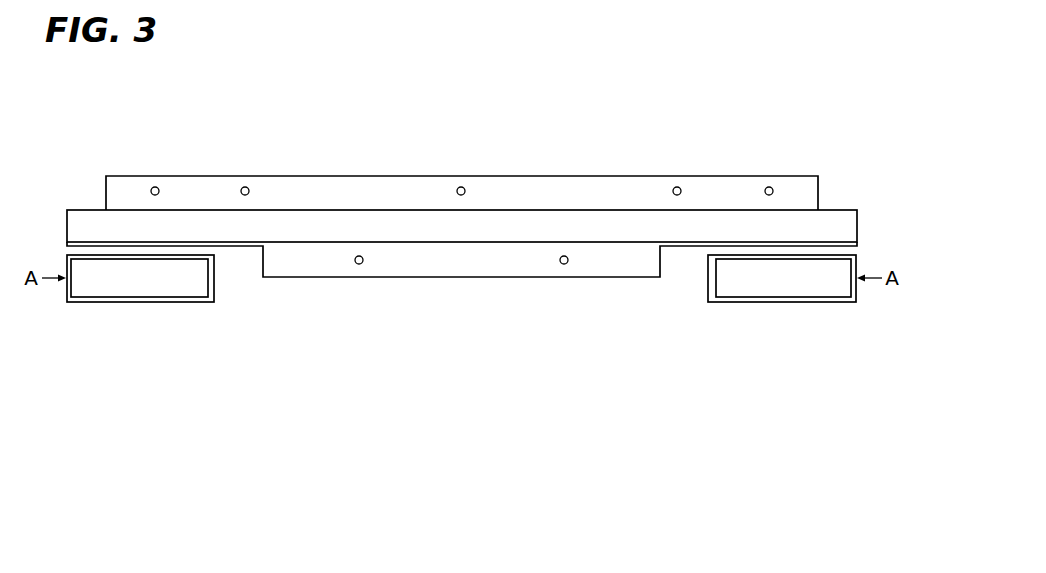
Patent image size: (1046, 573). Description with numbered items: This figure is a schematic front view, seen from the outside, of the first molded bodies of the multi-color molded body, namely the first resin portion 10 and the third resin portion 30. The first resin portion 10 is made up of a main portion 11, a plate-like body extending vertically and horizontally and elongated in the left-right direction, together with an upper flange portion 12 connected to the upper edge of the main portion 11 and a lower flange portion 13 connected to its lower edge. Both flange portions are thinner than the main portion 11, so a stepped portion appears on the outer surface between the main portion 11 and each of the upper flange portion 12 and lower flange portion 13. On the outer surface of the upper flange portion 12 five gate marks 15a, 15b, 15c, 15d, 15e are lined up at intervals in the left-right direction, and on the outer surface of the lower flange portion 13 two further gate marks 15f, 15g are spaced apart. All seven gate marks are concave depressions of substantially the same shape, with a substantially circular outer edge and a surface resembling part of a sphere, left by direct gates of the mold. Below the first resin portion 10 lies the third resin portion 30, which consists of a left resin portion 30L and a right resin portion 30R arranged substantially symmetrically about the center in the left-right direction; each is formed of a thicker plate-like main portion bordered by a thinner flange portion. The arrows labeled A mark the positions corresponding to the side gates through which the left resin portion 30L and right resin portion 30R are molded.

The first resin portion 10 is at (347, 132).
The main portion 11 is at (405, 227).
The upper flange portion 12 is at (380, 197).
The lower flange portion 13 is at (497, 263).
The gate mark 15a is at (154, 187).
The gate mark 15b is at (245, 187).
The gate mark 15c is at (462, 195).
The gate mark 15d is at (677, 187).
The gate mark 15e is at (769, 187).
The gate mark 15f is at (359, 264).
The gate mark 15g is at (564, 264).
The third resin portion 30 is at (173, 412).
The left resin portion 30L is at (143, 357).
The right resin portion 30R is at (683, 357).